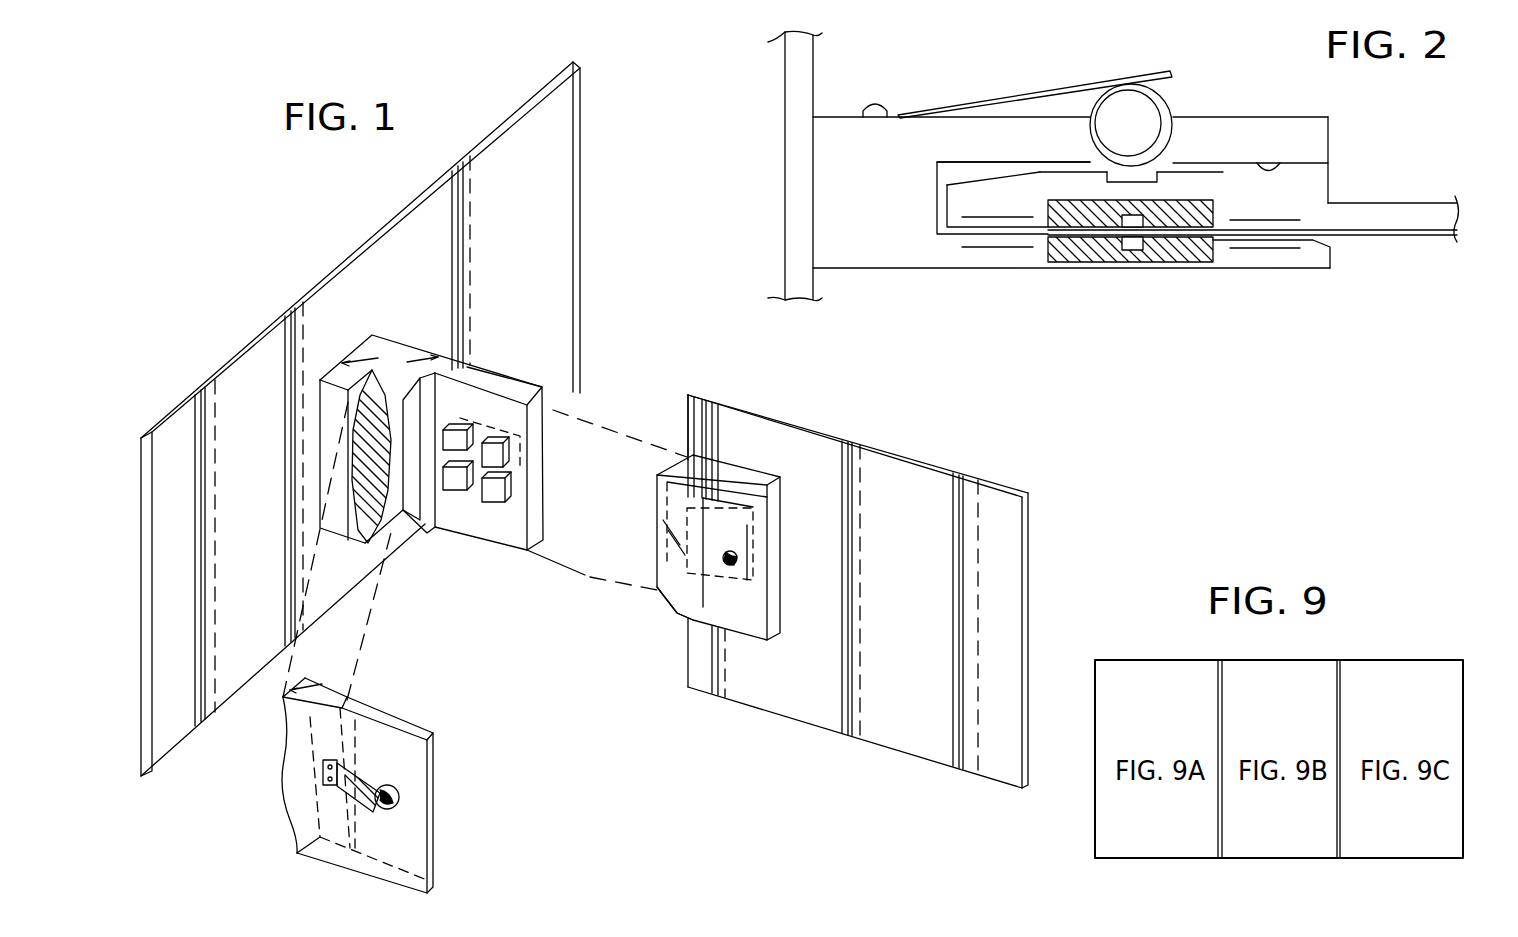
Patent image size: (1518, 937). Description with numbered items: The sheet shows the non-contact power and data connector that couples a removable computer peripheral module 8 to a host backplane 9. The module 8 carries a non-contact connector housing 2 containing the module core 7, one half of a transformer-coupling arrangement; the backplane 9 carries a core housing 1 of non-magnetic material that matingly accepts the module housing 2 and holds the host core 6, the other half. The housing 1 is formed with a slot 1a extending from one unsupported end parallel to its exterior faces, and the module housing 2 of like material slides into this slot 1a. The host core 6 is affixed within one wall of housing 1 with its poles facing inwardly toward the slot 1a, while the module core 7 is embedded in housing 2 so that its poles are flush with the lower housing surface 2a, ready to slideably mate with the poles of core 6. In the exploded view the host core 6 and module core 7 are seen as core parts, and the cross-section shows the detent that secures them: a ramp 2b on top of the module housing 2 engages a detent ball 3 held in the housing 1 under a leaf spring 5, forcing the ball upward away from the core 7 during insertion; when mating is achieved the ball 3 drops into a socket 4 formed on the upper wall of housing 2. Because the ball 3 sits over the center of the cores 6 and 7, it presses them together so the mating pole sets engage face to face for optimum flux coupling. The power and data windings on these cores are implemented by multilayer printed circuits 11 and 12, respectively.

In FIG. 1, the core housing 1 is at (410, 343).
In FIG. 2, the core housing 1 is at (812, 170).
In FIG. 1, the slot 1a is at (473, 383).
In FIG. 2, the slot 1a is at (1280, 163).
In FIG. 1, the module housing 2 is at (747, 473).
In FIG. 2, the module housing 2 is at (1337, 193).
In FIG. 1, the lower housing surface 2a is at (720, 450).
In FIG. 2, the lower housing surface 2a is at (1253, 233).
In FIG. 1, the ramp 2b is at (657, 572).
In FIG. 2, the ramp 2b is at (977, 183).
In FIG. 1, the detent ball 3 is at (400, 797).
In FIG. 2, the detent ball 3 is at (1170, 100).
In FIG. 1, the socket 4 is at (738, 567).
In FIG. 2, the socket 4 is at (1147, 185).
In FIG. 1, the leaf spring 5 is at (362, 777).
In FIG. 2, the leaf spring 5 is at (1053, 83).
In FIG. 1, the host core 6 is at (455, 483).
In FIG. 2, the host core 6 is at (1213, 260).
In FIG. 1, the module core 7 is at (770, 532).
In FIG. 2, the module core 7 is at (1050, 200).
In FIG. 1, the computer peripheral module 8 is at (1030, 610).
In FIG. 2, the computer peripheral module 8 is at (1417, 203).
In FIG. 1, the host backplane 9 is at (580, 262).
In FIG. 2, the host backplane 9 is at (813, 77).
In FIG. 2, the multilayer printed circuit 11 is at (1270, 248).
In FIG. 2, the multilayer printed circuit 12 is at (1250, 233).